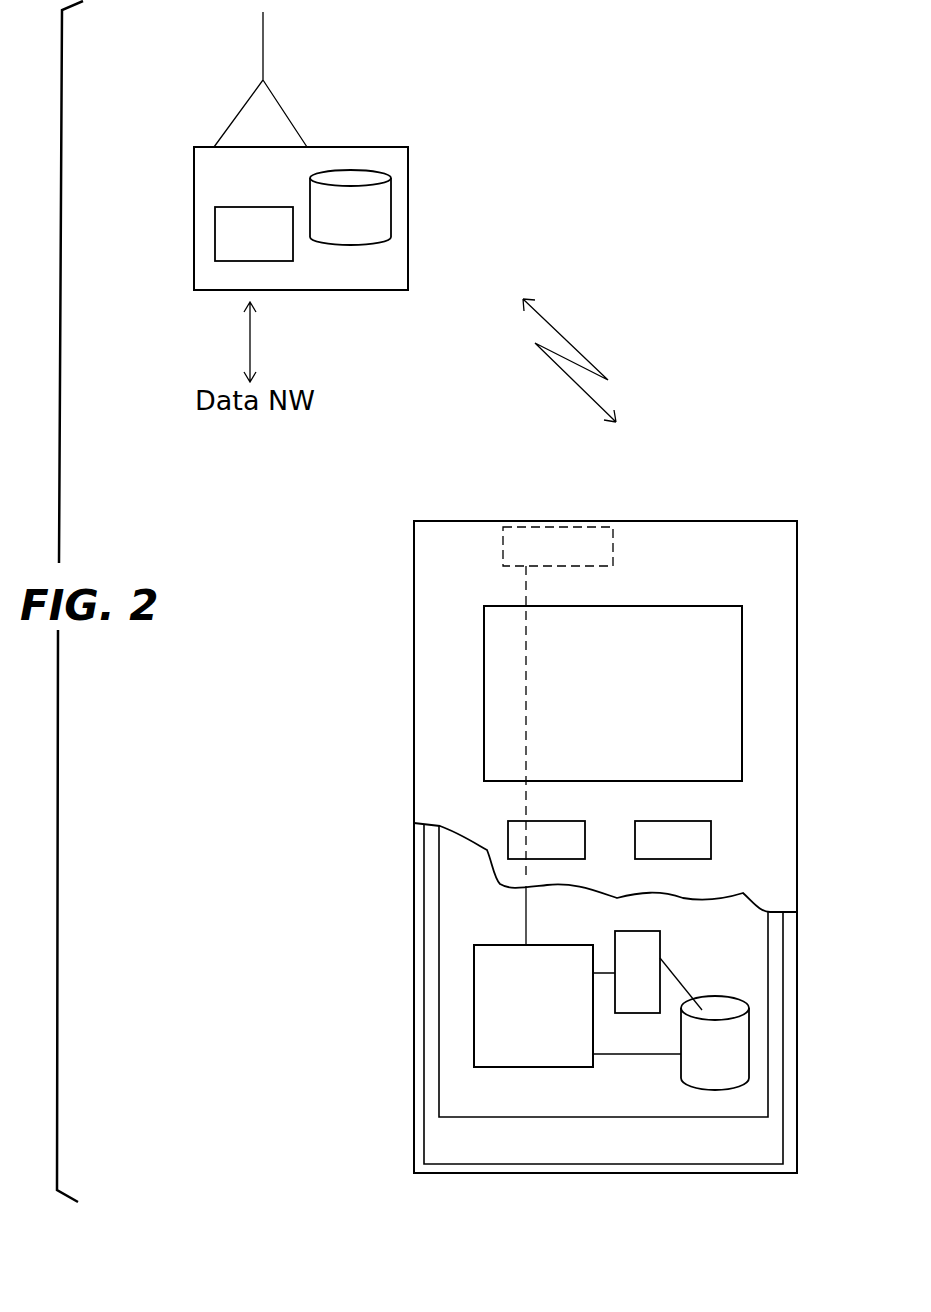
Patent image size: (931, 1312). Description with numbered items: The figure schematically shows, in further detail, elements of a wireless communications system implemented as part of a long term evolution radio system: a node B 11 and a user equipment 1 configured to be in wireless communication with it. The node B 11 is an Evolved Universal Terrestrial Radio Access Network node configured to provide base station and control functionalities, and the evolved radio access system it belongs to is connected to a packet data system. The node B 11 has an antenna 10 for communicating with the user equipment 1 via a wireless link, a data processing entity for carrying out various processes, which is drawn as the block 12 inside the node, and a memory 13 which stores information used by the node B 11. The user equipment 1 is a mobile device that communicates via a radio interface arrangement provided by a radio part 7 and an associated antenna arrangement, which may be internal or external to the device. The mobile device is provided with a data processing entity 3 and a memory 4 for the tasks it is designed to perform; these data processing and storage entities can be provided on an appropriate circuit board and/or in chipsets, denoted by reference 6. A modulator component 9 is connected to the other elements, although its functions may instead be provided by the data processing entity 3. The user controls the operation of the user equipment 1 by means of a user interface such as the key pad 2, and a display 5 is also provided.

The user equipment 1 is at (414, 570).
The key pad 2 is at (515, 832).
The data processing entity 3 is at (486, 996).
The memory 4 is at (717, 1002).
The display 5 is at (494, 676).
The circuit board 6 is at (462, 1092).
The radio part 7 is at (553, 527).
The modulator component 9 is at (634, 1013).
The antenna 10 is at (263, 42).
The node B 11 is at (408, 260).
The processing unit 12 is at (215, 232).
The memory 13 is at (392, 198).